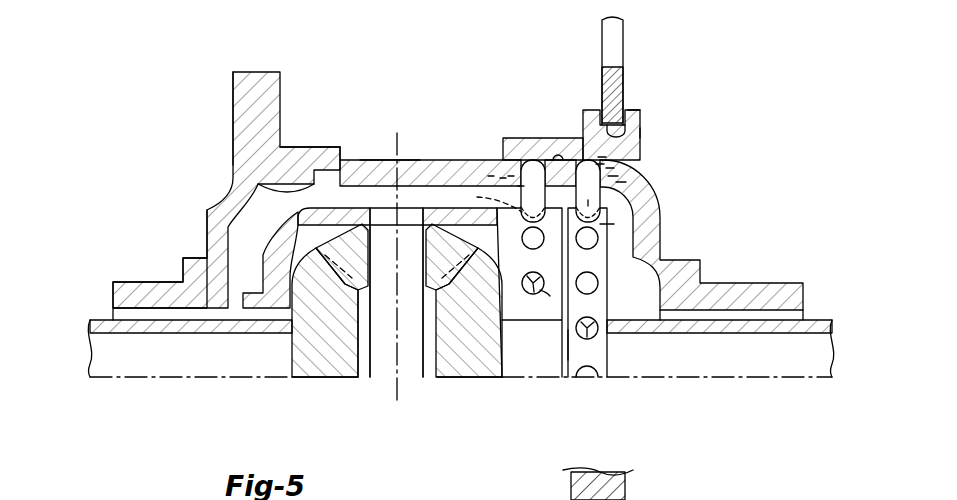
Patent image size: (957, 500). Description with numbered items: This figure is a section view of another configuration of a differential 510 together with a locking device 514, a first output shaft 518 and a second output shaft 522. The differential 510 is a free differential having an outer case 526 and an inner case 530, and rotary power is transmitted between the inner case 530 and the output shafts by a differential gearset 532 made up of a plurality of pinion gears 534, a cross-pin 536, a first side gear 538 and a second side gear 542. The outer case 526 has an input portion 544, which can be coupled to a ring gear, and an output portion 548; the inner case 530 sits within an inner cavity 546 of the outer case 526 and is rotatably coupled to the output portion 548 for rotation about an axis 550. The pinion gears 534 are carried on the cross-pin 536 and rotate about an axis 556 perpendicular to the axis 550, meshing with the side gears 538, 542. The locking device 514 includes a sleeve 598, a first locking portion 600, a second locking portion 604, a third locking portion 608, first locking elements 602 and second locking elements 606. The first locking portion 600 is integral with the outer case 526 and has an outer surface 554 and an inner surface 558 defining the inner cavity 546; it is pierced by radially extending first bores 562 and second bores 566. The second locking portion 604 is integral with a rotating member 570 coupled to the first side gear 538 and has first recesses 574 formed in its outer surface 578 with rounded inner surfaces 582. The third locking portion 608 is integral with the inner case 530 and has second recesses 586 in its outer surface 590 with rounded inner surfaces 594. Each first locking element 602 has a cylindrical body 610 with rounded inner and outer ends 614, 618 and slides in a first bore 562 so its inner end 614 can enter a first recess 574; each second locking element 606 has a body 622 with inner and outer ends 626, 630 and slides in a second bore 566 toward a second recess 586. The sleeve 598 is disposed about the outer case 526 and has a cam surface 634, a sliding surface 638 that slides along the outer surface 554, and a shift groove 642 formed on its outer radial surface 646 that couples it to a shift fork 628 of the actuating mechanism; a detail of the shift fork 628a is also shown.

The differential 510 is at (229, 75).
The input portion 544 is at (244, 86).
The inner surface 558 is at (256, 184).
The outer case 526 is at (317, 147).
The inner case 530 is at (267, 258).
The inner cavity 546 is at (241, 268).
The second output shaft 522 is at (100, 319).
The output portion 548 is at (412, 172).
The outer surface 554 is at (382, 160).
The axis 550 is at (347, 216).
The pinion gears 534 is at (337, 242).
The second side gear 542 is at (313, 365).
The cross-pin 536 is at (380, 368).
The axis 556 is at (379, 428).
The differential gearset 532 is at (427, 385).
The first side gear 538 is at (457, 365).
The second recesses 586 is at (540, 293).
The inner surface 594 is at (521, 283).
The outer surface 590 is at (546, 300).
The outer surface 578 is at (571, 350).
The second locking portion 604 is at (600, 298).
The inner surface 582 is at (586, 339).
The first recesses 574 is at (592, 333).
The rotating member 570 is at (600, 368).
The third locking portion 608 is at (548, 260).
The first output shaft 518 is at (818, 319).
The outer end 630 is at (530, 160).
The inner end 626 is at (484, 200).
The first locking portion 600 is at (490, 175).
The second locking elements 606 is at (502, 178).
The second bores 566 is at (510, 177).
The body 622 is at (522, 188).
The locking device 514 is at (581, 104).
The sliding surface 638 is at (560, 160).
The shift fork 628 is at (602, 40).
The bolt head detail 628a is at (571, 490).
The outer radial surface 646 is at (632, 110).
The sleeve 598 is at (638, 132).
The shift groove 642 is at (602, 157).
The cam surface 634 is at (600, 165).
The outer end 618 is at (610, 170).
The first bores 562 is at (614, 178).
The first locking elements 602 is at (620, 185).
The body 610 is at (592, 203).
The inner end 614 is at (597, 215).